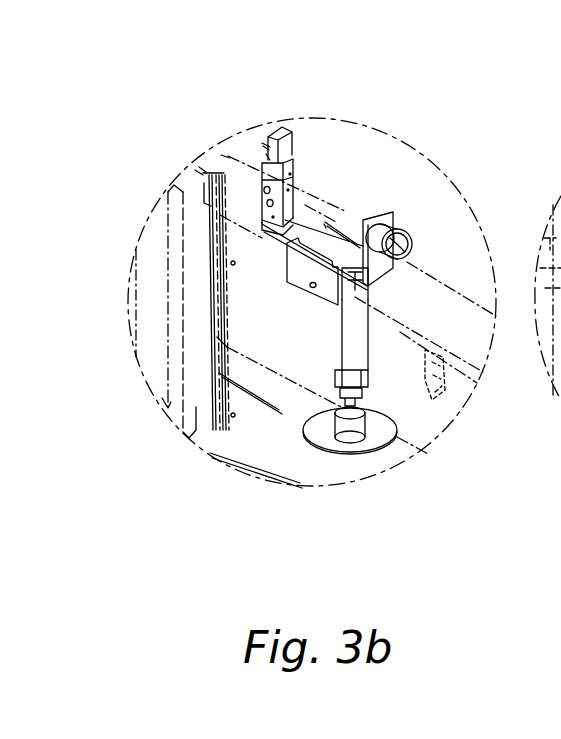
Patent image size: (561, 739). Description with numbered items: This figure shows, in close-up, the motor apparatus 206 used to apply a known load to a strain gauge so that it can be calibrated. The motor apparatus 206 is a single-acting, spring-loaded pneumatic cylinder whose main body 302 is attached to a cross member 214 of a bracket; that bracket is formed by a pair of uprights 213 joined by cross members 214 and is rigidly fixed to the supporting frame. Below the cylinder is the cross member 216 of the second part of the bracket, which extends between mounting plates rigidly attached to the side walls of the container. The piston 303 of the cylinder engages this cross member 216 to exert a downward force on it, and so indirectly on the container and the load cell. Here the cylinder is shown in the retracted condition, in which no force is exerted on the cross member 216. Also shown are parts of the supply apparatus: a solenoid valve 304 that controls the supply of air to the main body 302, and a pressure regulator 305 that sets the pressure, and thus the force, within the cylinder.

The motor apparatus 206 is at (420, 423).
The uprights 213 is at (190, 435).
The cross member 214 is at (420, 300).
The cross member 216 is at (268, 420).
The main body 302 is at (360, 337).
The piston 303 is at (372, 407).
The solenoid valve 304 is at (282, 145).
The pressure regulator 305 is at (388, 212).